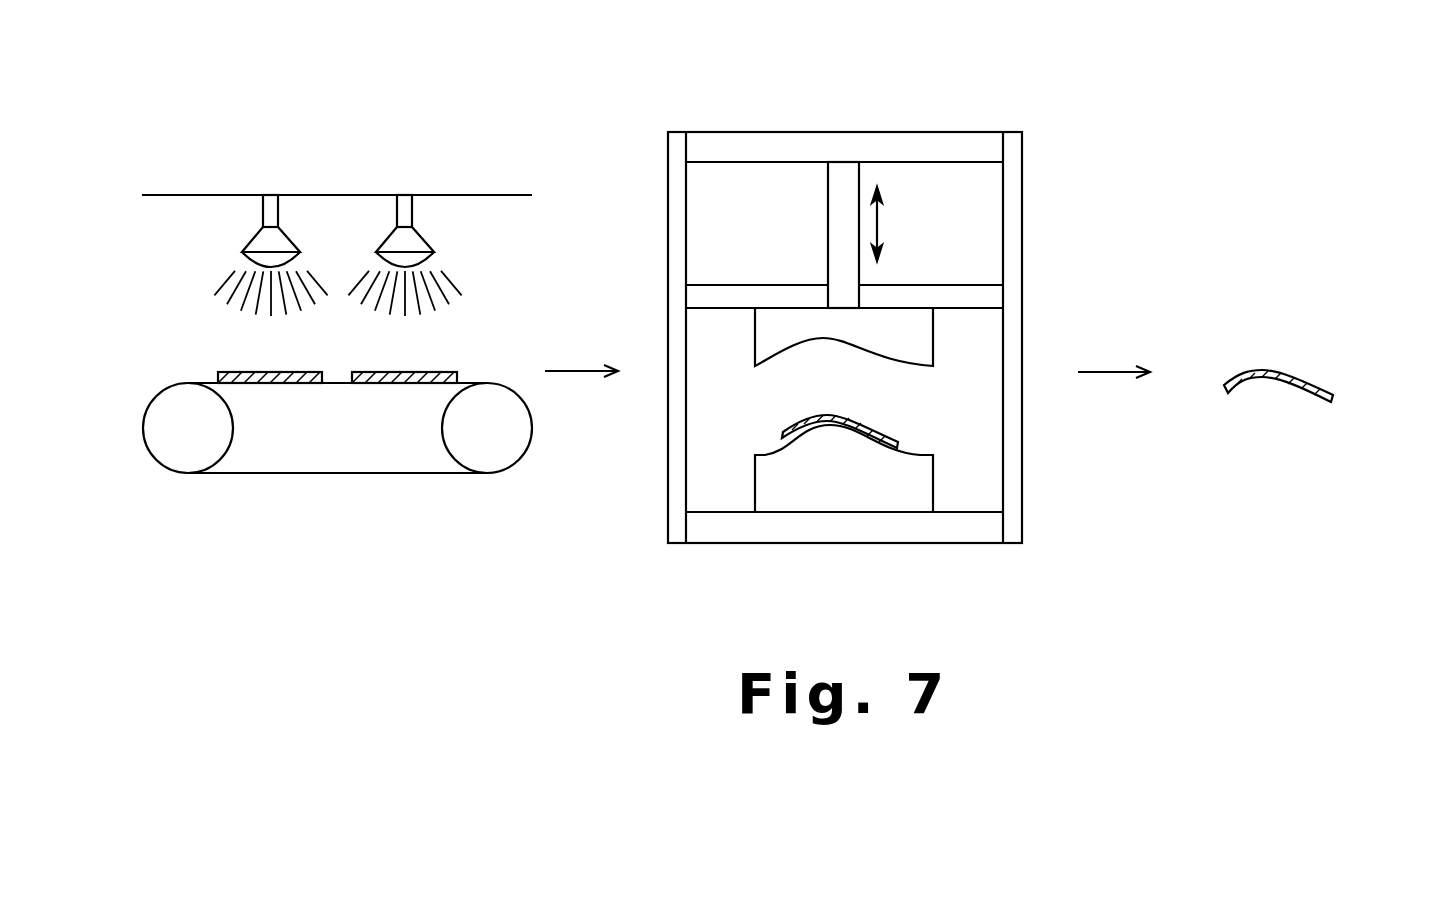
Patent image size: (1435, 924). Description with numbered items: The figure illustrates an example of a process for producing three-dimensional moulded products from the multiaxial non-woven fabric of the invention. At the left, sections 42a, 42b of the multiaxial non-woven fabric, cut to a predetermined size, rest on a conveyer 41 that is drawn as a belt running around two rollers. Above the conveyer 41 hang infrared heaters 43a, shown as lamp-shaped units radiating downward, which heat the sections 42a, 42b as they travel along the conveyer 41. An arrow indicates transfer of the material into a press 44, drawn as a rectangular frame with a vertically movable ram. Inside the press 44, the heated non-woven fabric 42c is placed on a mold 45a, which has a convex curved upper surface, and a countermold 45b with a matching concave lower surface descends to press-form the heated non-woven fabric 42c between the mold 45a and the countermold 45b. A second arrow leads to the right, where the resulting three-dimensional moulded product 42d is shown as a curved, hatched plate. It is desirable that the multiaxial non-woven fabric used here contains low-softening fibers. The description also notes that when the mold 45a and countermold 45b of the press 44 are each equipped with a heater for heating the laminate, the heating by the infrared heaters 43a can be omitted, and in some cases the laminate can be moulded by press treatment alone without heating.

The conveyer 41 is at (268, 474).
The section of multiaxial non-woven fabric 42a is at (237, 372).
The section of multiaxial non-woven fabric 42b is at (455, 372).
The heated non-woven fabric 42c is at (873, 432).
The three-dimensional moulded product 42d is at (1317, 385).
The infrared heater 43a is at (248, 240).
The press 44 is at (982, 143).
The mold 45a is at (762, 479).
The countermold 45b is at (922, 345).